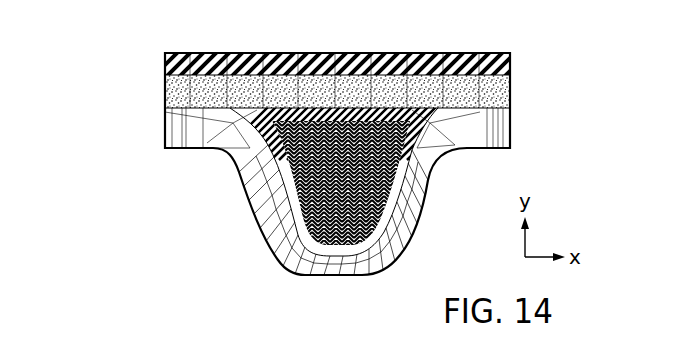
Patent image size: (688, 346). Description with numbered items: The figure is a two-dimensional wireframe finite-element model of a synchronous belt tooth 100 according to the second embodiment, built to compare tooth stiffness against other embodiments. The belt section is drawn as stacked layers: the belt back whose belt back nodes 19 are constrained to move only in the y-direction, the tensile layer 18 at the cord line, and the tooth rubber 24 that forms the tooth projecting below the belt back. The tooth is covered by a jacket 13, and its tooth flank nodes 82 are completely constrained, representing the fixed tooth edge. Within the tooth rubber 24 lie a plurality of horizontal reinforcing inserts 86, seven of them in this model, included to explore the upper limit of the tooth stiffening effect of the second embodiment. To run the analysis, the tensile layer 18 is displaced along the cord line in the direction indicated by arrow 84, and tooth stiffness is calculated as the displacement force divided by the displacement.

The belt tooth 100 is at (120, 63).
The belt back nodes 19 is at (348, 73).
The tensile layer 18 is at (165, 97).
The tooth rubber 24 is at (265, 140).
The horizontal reinforcing inserts 86 is at (298, 243).
The jacket 13 is at (305, 263).
The tooth flank nodes 82 is at (460, 162).
The arrow 84 is at (533, 103).